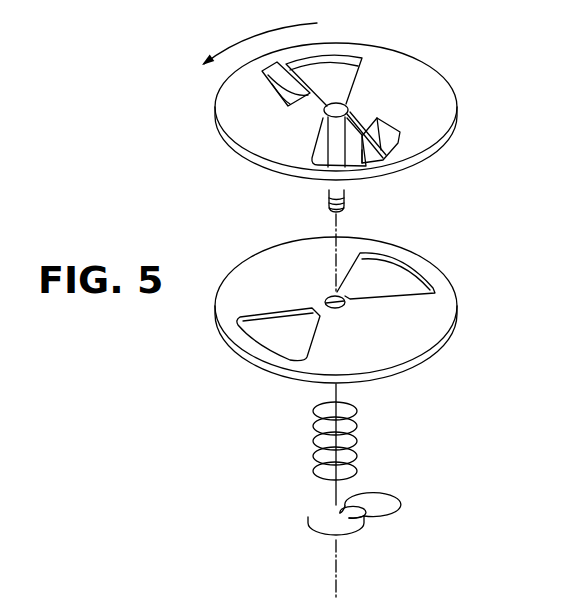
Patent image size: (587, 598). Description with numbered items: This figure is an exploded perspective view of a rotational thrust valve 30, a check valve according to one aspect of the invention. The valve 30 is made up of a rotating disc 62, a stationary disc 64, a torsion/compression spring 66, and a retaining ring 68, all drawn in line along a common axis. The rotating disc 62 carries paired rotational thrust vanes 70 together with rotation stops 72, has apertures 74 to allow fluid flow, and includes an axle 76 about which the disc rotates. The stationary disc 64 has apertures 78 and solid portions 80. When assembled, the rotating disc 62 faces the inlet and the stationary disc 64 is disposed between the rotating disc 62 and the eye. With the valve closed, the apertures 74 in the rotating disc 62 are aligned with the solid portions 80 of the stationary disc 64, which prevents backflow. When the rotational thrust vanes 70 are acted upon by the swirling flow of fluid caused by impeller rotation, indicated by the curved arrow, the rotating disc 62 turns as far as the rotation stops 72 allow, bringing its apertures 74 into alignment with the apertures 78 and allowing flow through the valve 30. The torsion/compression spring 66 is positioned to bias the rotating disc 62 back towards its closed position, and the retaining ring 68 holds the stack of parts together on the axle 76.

The rotational thrust valve 30 is at (182, 158).
The rotating disc 62 is at (458, 74).
The stationary disc 64 is at (470, 282).
The torsion/compression spring 66 is at (352, 414).
The retaining ring 68 is at (360, 515).
The rotational thrust vanes 70 is at (263, 75).
The rotation stops 72 is at (368, 155).
The apertures 74 is at (325, 68).
The axle 76 is at (327, 197).
The apertures 78 is at (395, 273).
The solid portions 80 is at (307, 255).